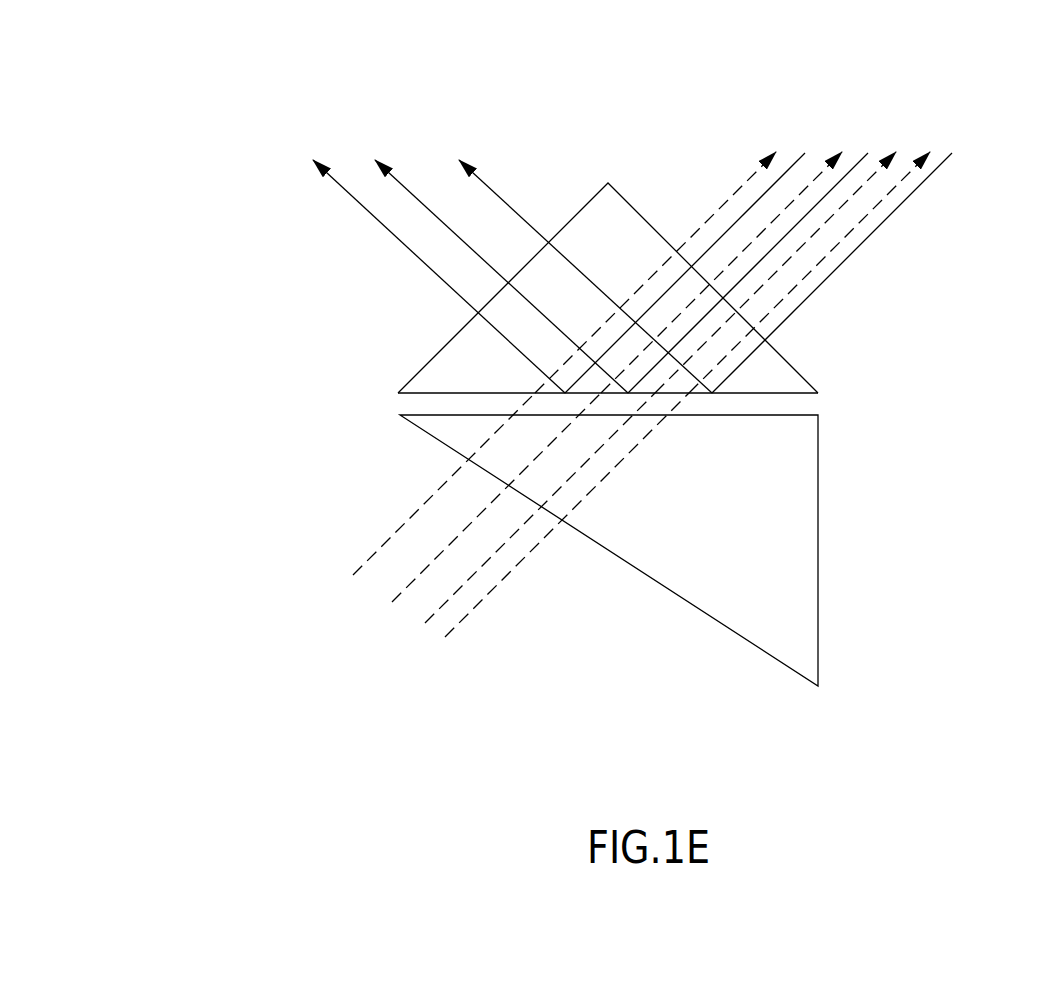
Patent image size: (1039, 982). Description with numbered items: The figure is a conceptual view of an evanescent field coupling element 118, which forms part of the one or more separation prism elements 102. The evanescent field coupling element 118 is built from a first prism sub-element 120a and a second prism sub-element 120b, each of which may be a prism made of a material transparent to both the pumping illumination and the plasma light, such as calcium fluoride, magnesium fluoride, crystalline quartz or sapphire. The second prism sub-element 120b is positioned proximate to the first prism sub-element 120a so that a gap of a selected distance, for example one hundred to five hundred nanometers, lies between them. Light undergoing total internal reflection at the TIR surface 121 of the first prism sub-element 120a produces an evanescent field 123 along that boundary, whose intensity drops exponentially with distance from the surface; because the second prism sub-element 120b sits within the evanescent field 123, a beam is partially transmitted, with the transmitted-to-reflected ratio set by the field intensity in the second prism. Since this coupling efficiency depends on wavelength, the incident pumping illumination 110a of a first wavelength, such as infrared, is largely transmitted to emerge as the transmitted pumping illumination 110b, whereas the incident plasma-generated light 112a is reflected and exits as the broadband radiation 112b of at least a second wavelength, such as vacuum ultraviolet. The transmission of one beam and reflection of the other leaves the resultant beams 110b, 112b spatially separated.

The separation prism elements 102 is at (258, 102).
The incident pumping illumination 110a is at (405, 619).
The transmitted pumping illumination 110b is at (743, 170).
The incident plasma-generated light 112a is at (904, 213).
The broadband radiation 112b is at (421, 161).
The evanescent field coupling element 118 is at (881, 372).
The first prism sub-element 120a is at (624, 196).
The second prism sub-element 120b is at (819, 480).
The TIR surface 121 is at (445, 393).
The evanescent field 123 is at (805, 403).